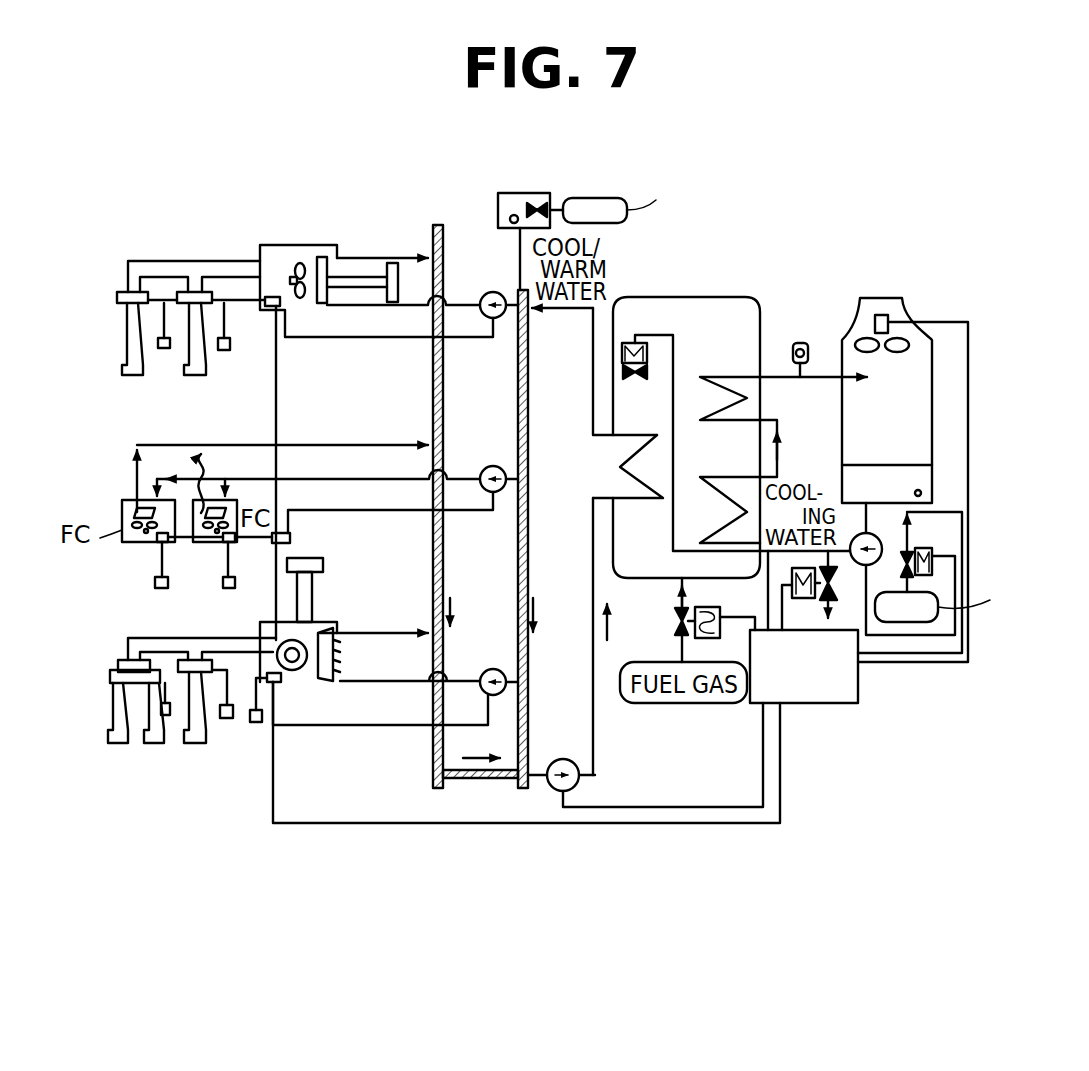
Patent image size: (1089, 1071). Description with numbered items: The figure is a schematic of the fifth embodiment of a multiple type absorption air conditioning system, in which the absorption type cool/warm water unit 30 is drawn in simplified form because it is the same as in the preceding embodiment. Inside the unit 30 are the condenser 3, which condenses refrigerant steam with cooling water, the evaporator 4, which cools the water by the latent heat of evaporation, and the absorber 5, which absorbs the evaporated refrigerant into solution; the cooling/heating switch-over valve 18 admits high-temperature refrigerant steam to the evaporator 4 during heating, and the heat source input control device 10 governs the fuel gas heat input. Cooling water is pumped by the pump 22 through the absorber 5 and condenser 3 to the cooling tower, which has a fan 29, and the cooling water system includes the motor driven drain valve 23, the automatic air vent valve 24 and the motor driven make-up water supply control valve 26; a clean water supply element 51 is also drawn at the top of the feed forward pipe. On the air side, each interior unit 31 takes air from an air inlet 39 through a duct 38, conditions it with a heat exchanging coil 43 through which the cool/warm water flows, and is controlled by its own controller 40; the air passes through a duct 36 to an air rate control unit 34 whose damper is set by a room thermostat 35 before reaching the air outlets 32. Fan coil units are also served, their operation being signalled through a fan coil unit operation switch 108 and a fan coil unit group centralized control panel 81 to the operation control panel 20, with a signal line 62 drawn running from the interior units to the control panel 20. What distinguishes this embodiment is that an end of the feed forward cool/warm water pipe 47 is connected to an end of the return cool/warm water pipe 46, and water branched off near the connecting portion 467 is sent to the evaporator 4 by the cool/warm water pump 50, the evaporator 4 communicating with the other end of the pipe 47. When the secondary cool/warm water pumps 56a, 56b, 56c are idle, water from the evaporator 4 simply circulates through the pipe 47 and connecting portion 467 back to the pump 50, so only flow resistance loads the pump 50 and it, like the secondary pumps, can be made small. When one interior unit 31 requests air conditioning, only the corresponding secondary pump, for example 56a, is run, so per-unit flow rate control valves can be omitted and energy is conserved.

The condenser 3 is at (718, 377).
The evaporator 4 is at (655, 435).
The absorber 5 is at (723, 477).
The heat source input control device 10 is at (710, 638).
The cooling/heating switch-over valve 18 is at (634, 343).
The operation control panel 20 is at (807, 703).
The pump 22 is at (882, 555).
The motor driven drain valve 23 is at (792, 585).
The automatic air vent valve 24 is at (800, 343).
The motor driven make-up water supply control valve 26 is at (935, 541).
The fan 29 is at (863, 338).
The absorption type cool/warm water unit 30 is at (708, 297).
The interior unit 31 is at (290, 245).
The air outlet 32 is at (195, 745).
The air rate control unit (VAV unit) 34 is at (117, 298).
The room thermostat 35 is at (227, 720).
The duct 36 is at (218, 261).
The duct 38 is at (363, 277).
The air inlet 39 is at (393, 303).
The controller 40 is at (164, 349).
The heat exchanging coil 43 is at (315, 310).
The return cool/warm water pipe 46 is at (444, 376).
The feed forward cool/warm water pipe 47 is at (529, 456).
The cool/warm water pump 50 is at (560, 759).
The water supply valve 51 is at (520, 193).
The secondary cool/warm water pump 56a is at (490, 292).
The secondary cool/warm water pump 56b is at (493, 466).
The secondary cool/warm water pump 56c is at (493, 669).
The signal line 62 is at (347, 825).
The fan coil unit group centralized control panel 81 is at (280, 543).
The fan coil unit operation switch 108 is at (228, 588).
The connecting portion 467 is at (483, 779).